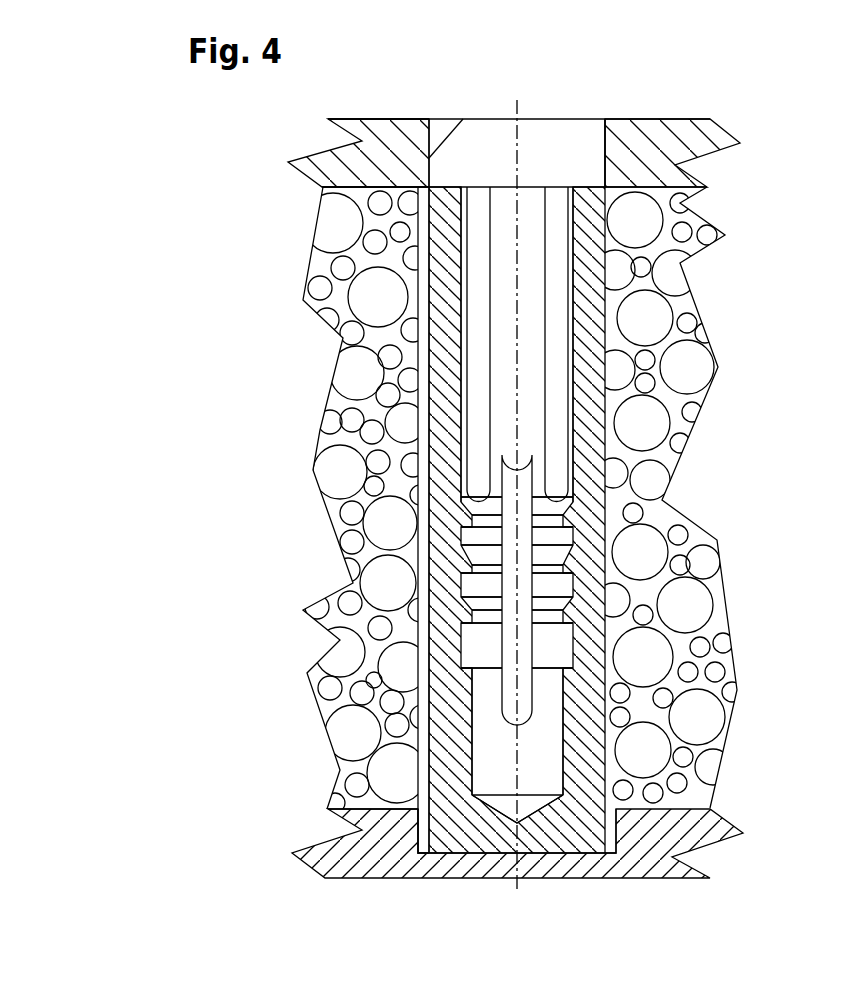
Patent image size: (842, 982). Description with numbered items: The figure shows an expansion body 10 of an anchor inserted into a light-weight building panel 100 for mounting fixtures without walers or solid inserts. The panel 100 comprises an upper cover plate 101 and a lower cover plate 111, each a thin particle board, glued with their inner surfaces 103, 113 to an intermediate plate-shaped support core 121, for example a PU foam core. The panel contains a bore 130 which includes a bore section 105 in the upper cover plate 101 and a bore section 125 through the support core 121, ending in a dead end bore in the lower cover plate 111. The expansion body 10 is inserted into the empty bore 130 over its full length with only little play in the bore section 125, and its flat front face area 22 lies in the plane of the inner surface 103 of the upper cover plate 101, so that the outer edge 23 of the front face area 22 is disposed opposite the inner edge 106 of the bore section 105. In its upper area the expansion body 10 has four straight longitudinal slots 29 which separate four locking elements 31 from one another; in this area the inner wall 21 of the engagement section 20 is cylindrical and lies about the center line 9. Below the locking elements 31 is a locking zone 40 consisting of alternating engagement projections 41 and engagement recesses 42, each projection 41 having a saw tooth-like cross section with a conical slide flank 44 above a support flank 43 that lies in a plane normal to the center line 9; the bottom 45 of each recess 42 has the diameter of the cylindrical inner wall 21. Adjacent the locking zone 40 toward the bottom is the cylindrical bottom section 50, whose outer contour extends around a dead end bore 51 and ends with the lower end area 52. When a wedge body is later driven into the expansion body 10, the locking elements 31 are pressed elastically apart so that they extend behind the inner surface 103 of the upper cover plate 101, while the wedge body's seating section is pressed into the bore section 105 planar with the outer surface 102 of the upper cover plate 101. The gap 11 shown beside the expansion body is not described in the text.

The light-weight building panel 100 is at (360, 112).
The upper cover plate 101 is at (408, 151).
The outer surface of the first cover plate 102 is at (350, 118).
The inner surface of the upper cover plate 103 is at (365, 187).
The bore section 105 is at (463, 119).
The front face area 22 is at (443, 187).
The inner edge of the bore 106 is at (570, 270).
The bore 130 is at (605, 116).
The outer edge of the front face area 23 is at (649, 113).
The longitudinal slots 29 is at (478, 222).
The inner wall 21 is at (461, 278).
The engagement section 20 is at (447, 345).
The locking elements 31 is at (443, 375).
The support core 121 is at (345, 397).
The gap 11 is at (428, 438).
The expansion body 10 is at (420, 478).
The locking zone 40 is at (423, 585).
The center line 9 is at (518, 653).
The cylindrical bottom section 50 is at (417, 753).
The lower end area 52 is at (407, 810).
The inner surface of the lower cover plate 113 is at (367, 810).
The lower cover plate 111 is at (473, 852).
The bore section 125 is at (698, 497).
The engagement projection 41 is at (568, 519).
The engagement recess 42 is at (568, 533).
The bottom of the engagement groove 45 is at (568, 556).
The slide flank 44 is at (568, 575).
The support flank 43 is at (565, 590).
The dead end bore 51 is at (565, 707).